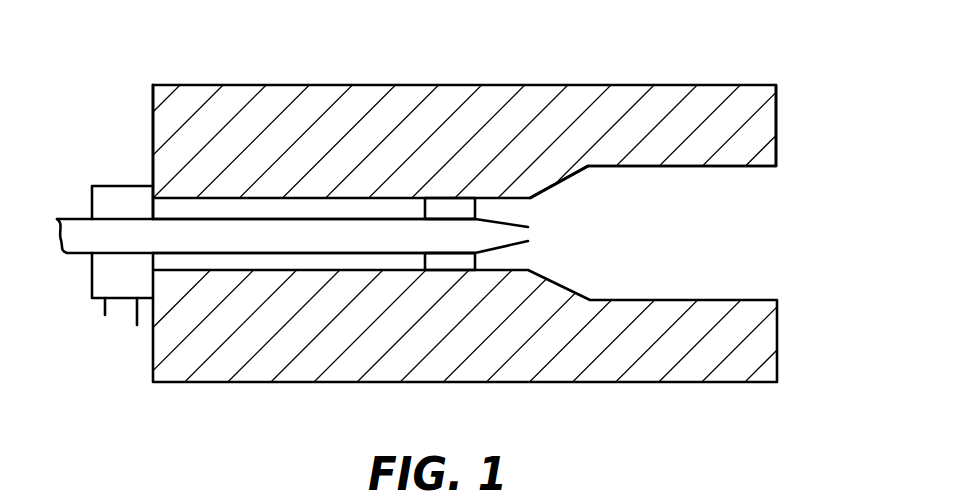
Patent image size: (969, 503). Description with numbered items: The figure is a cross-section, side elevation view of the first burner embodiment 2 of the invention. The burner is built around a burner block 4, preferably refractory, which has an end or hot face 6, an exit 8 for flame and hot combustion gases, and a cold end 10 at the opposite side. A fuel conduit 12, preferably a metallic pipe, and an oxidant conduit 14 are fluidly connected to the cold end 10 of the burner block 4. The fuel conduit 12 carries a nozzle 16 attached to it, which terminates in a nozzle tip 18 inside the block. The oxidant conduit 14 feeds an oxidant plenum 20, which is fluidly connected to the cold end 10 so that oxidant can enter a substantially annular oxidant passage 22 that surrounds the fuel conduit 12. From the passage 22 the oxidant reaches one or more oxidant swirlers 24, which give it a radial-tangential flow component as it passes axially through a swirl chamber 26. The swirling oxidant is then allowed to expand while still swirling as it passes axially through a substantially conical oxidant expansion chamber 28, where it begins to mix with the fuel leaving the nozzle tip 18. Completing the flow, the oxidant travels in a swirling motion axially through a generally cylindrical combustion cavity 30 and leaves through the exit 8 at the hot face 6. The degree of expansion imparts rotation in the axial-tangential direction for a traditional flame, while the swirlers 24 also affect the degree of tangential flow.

The first burner embodiment 2 is at (703, 41).
The burner block 4 is at (615, 84).
The hot face 6 is at (777, 137).
The exit 8 is at (777, 300).
The cold end 10 is at (153, 110).
The fuel conduit 12 is at (76, 256).
The oxidant conduit 14 is at (137, 325).
The nozzle 16 is at (529, 242).
The nozzle tip 18 is at (529, 227).
The oxidant plenum 20 is at (112, 185).
The substantially annular oxidant passage 22 is at (246, 198).
The oxidant swirler 24 is at (452, 198).
The swirl chamber 26 is at (502, 198).
The substantially conical oxidant expansion chamber 28 is at (566, 180).
The generally cylindrical combustion cavity 30 is at (697, 167).